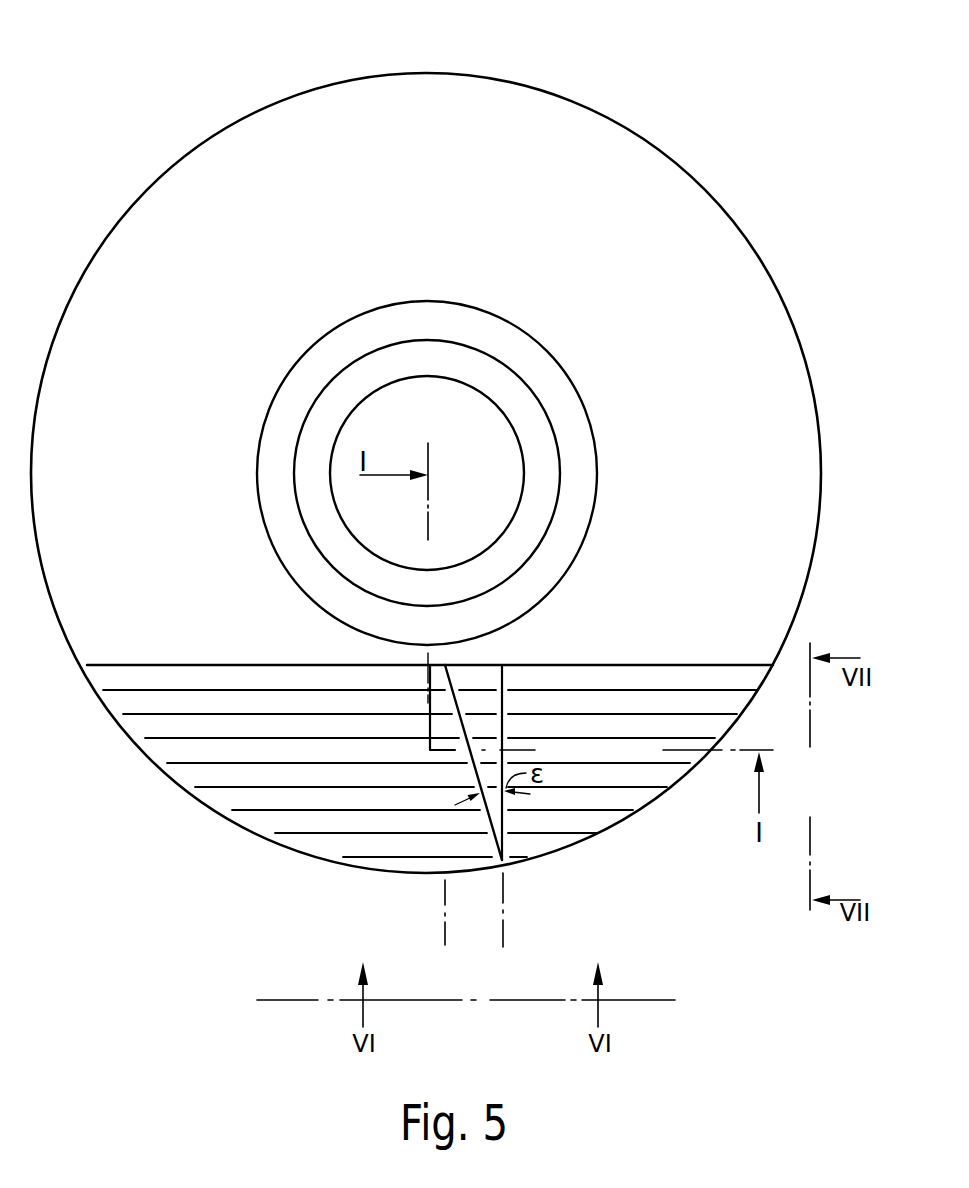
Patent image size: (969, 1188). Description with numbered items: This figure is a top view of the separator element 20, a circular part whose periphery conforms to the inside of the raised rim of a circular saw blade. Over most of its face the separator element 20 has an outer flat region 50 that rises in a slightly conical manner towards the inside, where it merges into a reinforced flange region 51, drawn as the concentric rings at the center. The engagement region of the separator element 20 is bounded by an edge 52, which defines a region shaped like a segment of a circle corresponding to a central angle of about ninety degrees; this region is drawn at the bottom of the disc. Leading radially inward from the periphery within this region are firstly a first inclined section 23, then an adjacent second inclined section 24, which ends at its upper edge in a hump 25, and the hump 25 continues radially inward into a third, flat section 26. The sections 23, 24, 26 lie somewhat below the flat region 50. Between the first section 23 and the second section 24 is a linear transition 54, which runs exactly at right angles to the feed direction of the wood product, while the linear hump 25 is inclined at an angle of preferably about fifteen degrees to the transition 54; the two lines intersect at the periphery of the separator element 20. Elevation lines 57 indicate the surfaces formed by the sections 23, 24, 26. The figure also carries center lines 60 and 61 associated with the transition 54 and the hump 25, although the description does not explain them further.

The separator element 20 is at (426, 441).
The outer flat region 50 is at (693, 211).
The reinforced flange region 51 is at (500, 338).
The edge 52 is at (632, 665).
The first inclined section 23 is at (625, 775).
The second inclined section 24 is at (487, 700).
The hump 25 is at (450, 702).
The third flat section 26 is at (323, 797).
The linear transition 54 is at (507, 818).
The elevation lines 57 is at (257, 790).
The center line 60 is at (445, 933).
The center line 61 is at (503, 930).